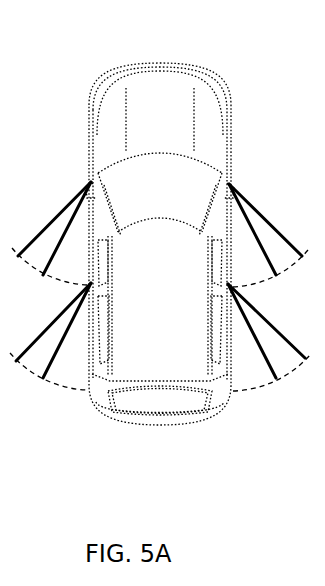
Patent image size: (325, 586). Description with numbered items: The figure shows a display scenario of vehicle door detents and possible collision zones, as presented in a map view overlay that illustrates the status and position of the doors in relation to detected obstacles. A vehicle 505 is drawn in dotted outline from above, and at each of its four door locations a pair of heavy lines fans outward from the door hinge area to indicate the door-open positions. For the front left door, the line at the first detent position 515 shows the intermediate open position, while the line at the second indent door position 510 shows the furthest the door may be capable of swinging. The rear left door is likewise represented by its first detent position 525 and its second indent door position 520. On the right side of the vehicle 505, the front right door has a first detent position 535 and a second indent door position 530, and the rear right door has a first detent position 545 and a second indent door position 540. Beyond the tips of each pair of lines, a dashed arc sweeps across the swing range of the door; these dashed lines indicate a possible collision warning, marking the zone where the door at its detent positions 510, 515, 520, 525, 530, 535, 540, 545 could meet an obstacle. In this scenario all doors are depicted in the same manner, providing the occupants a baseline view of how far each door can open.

The vehicle 505 is at (163, 67).
The second indent door position 510 is at (73, 203).
The first detent position 515 is at (56, 242).
The second indent door position 520 is at (72, 308).
The first detent position 525 is at (56, 340).
The second indent door position 530 is at (246, 203).
The first detent position 535 is at (260, 240).
The second indent door position 540 is at (256, 310).
The first detent position 545 is at (262, 340).